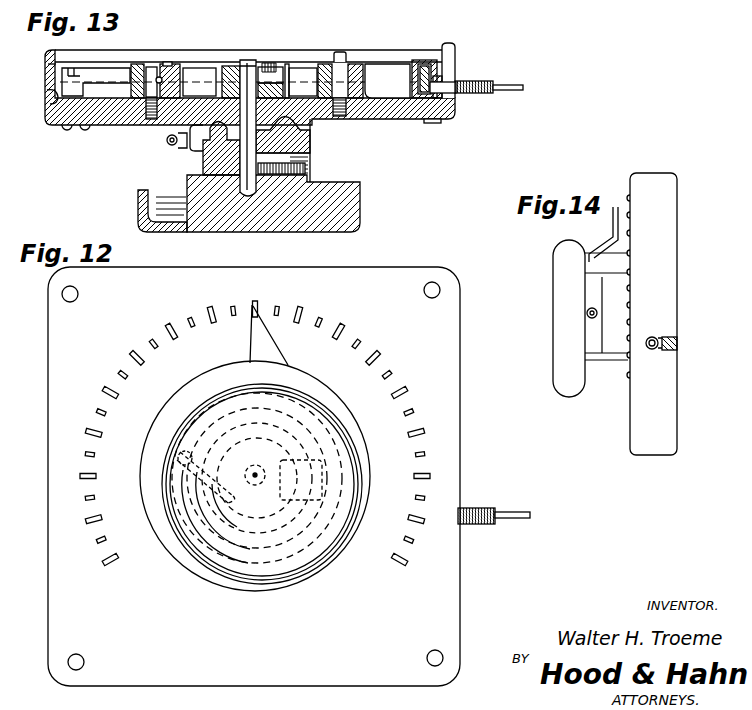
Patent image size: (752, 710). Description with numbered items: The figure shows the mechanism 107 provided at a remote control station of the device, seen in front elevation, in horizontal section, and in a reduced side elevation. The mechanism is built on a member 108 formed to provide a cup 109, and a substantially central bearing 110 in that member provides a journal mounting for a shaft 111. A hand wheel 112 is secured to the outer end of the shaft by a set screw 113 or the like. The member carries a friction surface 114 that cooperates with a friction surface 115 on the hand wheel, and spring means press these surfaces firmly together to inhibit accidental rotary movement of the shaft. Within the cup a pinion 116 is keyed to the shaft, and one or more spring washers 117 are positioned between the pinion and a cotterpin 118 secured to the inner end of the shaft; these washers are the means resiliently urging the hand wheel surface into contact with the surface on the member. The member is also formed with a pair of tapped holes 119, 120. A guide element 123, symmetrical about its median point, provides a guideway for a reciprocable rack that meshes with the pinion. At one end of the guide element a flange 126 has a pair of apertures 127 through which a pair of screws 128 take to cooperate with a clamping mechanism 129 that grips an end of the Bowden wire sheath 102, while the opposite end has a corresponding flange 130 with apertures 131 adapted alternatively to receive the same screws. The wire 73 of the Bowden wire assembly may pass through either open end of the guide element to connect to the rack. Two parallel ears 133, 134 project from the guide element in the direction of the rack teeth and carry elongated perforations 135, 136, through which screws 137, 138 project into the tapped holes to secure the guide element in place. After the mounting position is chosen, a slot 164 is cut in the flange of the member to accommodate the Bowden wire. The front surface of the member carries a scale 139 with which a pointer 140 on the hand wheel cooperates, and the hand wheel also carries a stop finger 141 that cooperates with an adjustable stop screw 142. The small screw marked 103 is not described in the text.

In FIG. 13, the wire 73 is at (508, 86).
In FIG. 12, the wire 73 is at (520, 512).
In FIG. 13, the Bowden wire sheath 102 is at (463, 94).
In FIG. 12, the Bowden wire sheath 102 is at (478, 508).
In FIG. 14, the screw 103 is at (650, 337).
In FIG. 13, the remote control station mechanism 107 is at (50, 145).
In FIG. 14, the remote control station mechanism 107 is at (688, 168).
In FIG. 13, the member 108 is at (131, 125).
In FIG. 12, the member 108 is at (254, 476).
In FIG. 14, the member 108 is at (629, 186).
In FIG. 13, the cup 109 is at (48, 92).
In FIG. 13, the bearing 110 is at (310, 121).
In FIG. 13, the shaft 111 is at (252, 60).
In FIG. 12, the shaft 111 is at (255, 466).
In FIG. 13, the hand wheel 112 is at (196, 232).
In FIG. 12, the hand wheel 112 is at (299, 578).
In FIG. 14, the hand wheel 112 is at (558, 305).
In FIG. 13, the set screw 113 is at (306, 173).
In FIG. 14, the set screw 113 is at (588, 322).
In FIG. 13, the friction surface 114 is at (280, 161).
In FIG. 13, the friction surface 115 is at (197, 157).
In FIG. 13, the pinion 116 is at (289, 68).
In FIG. 13, the spring washers 117 is at (266, 82).
In FIG. 13, the cotterpin 118 is at (235, 66).
In FIG. 13, the tapped hole 119 is at (153, 120).
In FIG. 13, the tapped hole 120 is at (342, 118).
In FIG. 13, the guide element 123 is at (410, 78).
In FIG. 13, the flange 126 is at (449, 56).
In FIG. 14, the flange 126 is at (677, 343).
In FIG. 13, the apertures 127 is at (447, 45).
In FIG. 13, the screws 128 is at (418, 58).
In FIG. 13, the clamping mechanism 129 is at (430, 123).
In FIG. 13, the flange 130 is at (84, 78).
In FIG. 13, the apertures 131 is at (50, 65).
In FIG. 13, the ear 133 is at (137, 64).
In FIG. 13, the ear 134 is at (324, 72).
In FIG. 13, the perforation 135 is at (168, 72).
In FIG. 13, the perforation 136 is at (354, 72).
In FIG. 13, the screw 137 is at (166, 62).
In FIG. 13, the screw 138 is at (337, 60).
In FIG. 12, the scale 139 is at (94, 522).
In FIG. 14, the scale 139 is at (629, 251).
In FIG. 12, the pointer 140 is at (273, 342).
In FIG. 14, the pointer 140 is at (612, 231).
In FIG. 13, the stop finger 141 is at (280, 144).
In FIG. 12, the stop finger 141 is at (290, 468).
In FIG. 13, the stop screw 142 is at (168, 151).
In FIG. 12, the stop screw 142 is at (176, 448).
In FIG. 13, the slot 164 is at (453, 80).
In FIG. 14, the slot 164 is at (665, 352).